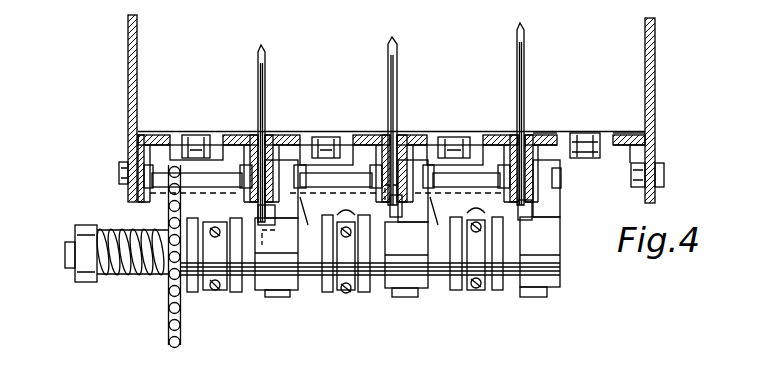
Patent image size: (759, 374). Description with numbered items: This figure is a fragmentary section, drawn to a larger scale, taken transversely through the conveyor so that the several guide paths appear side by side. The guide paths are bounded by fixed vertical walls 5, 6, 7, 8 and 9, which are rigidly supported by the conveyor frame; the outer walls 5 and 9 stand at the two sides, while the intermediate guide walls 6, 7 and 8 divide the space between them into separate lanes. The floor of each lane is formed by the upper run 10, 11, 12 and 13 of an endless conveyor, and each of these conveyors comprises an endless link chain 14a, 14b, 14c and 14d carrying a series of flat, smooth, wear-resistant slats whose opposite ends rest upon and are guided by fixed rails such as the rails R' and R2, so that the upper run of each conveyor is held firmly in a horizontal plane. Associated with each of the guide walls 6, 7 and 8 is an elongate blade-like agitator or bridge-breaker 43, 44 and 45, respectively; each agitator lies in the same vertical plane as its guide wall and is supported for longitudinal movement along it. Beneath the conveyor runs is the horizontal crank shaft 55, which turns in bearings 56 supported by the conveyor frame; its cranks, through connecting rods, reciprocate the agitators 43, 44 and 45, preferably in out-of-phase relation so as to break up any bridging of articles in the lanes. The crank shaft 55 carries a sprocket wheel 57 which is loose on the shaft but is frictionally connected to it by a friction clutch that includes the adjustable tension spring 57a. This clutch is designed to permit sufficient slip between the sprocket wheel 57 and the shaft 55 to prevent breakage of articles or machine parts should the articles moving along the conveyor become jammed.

The vertical wall 5 is at (128, 62).
The guide wall 6 is at (258, 55).
The guide wall 7 is at (388, 55).
The guide wall 8 is at (517, 38).
The vertical wall 9 is at (655, 78).
The upper run 10 is at (155, 133).
The upper run 11 is at (305, 133).
The upper run 12 is at (437, 118).
The upper run 13 is at (565, 133).
The endless link chain 14a is at (203, 143).
The endless link chain 14b is at (333, 142).
The endless link chain 14c is at (473, 124).
The endless link chain 14d is at (588, 137).
The agitator 43 is at (260, 88).
The agitator 44 is at (391, 86).
The agitator 45 is at (519, 62).
The fixed rail R' is at (545, 113).
The fixed rail R2 is at (628, 133).
The crank shaft 55 is at (313, 280).
The bearings 56 is at (270, 278).
The sprocket wheel 57 is at (170, 330).
The adjustable tension spring 57a is at (123, 278).